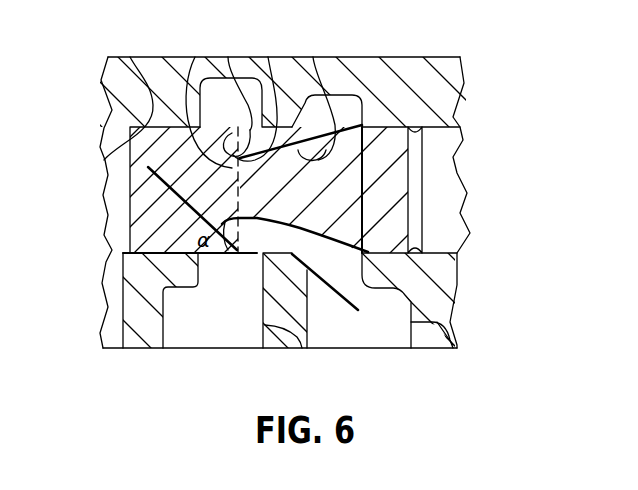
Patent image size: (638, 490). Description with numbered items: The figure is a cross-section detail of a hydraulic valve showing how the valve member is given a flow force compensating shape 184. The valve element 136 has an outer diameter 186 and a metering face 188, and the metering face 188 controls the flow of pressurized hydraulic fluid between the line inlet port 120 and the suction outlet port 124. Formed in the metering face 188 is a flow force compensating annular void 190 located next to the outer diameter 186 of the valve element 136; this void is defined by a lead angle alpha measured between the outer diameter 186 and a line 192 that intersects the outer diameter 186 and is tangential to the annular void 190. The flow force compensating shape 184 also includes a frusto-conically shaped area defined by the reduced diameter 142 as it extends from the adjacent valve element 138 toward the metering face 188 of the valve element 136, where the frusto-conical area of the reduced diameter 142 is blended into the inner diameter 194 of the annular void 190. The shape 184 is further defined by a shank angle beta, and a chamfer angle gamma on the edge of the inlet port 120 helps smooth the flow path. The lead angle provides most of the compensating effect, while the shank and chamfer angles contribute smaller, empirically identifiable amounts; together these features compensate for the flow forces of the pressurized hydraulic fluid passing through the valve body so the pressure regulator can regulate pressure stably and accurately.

The line inlet port 120 is at (450, 333).
The suction outlet port 124 is at (287, 327).
The valve element 136 is at (130, 172).
The valve element 138 is at (406, 167).
The reduced diameter 142 is at (320, 242).
The flow force compensating shape 184 is at (313, 57).
The outer diameter 186 is at (130, 57).
The metering face 188 is at (268, 57).
The flow force compensating annular void 190 is at (228, 57).
The line 192 is at (130, 215).
The inner diameter 194 is at (195, 57).